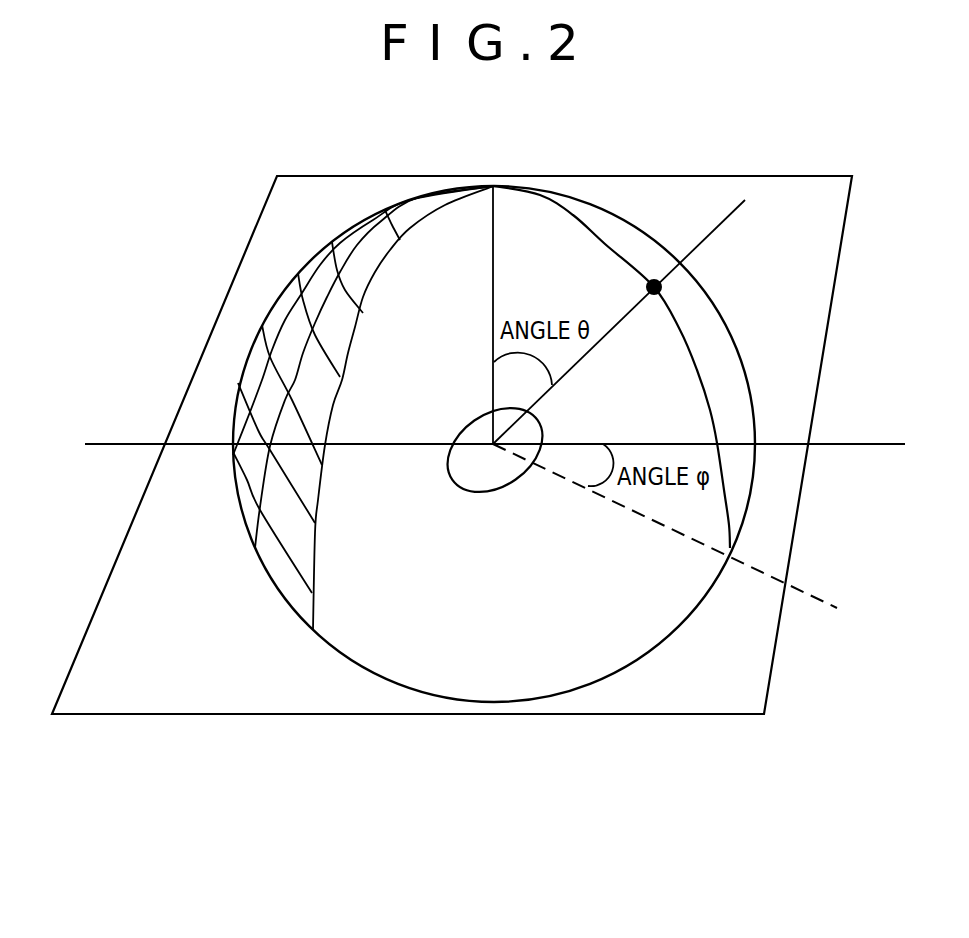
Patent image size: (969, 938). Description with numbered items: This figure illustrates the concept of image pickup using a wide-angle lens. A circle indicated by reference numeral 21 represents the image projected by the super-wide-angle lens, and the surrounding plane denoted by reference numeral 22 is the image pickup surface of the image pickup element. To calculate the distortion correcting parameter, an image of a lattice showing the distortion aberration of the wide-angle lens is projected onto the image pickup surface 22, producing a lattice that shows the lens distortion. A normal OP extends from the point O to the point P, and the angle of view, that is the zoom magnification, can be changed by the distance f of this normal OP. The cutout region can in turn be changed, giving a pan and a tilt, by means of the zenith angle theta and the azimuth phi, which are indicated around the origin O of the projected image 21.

The image projected by the super-wide-angle lens 21 is at (458, 488).
The image pickup surface 22 is at (705, 668).
The origin of normal OP O is at (495, 330).
The end point of normal OP P is at (674, 243).
The distance of normal OP f is at (619, 322).